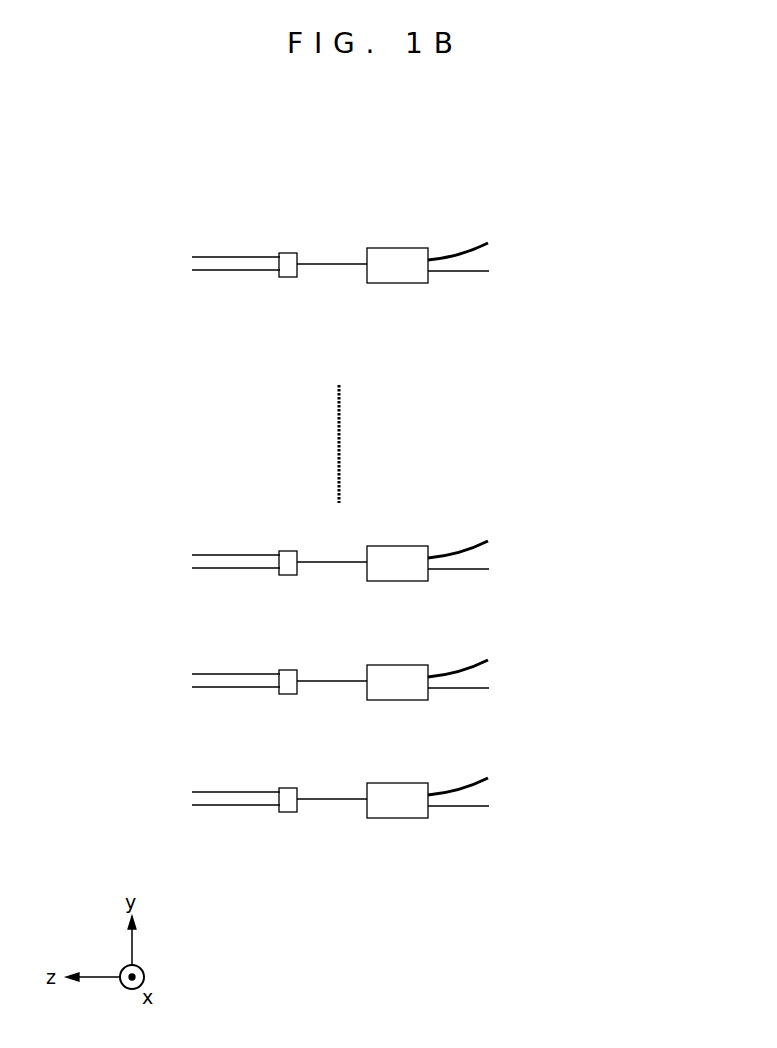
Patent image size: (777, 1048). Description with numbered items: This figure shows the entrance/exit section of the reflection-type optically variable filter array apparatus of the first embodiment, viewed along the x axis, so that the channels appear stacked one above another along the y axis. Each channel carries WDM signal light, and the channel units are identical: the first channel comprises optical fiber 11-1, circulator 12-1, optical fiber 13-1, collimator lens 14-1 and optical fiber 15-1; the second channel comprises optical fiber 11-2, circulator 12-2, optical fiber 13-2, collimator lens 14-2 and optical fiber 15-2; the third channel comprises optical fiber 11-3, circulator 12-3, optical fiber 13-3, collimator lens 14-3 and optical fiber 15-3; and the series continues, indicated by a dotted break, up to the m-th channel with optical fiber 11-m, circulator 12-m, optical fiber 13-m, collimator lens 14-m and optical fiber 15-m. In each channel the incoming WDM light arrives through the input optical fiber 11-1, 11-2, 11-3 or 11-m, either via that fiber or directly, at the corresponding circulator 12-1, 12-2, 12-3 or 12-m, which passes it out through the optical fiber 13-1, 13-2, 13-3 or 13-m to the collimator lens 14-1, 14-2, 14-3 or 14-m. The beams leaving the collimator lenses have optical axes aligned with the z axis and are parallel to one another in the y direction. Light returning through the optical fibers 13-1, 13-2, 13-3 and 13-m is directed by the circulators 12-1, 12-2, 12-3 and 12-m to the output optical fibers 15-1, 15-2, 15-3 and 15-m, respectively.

The optical fiber 11-m is at (457, 252).
The circulator 12-m is at (400, 283).
The optical fiber 13-m is at (340, 264).
The collimator lens 14-m is at (282, 277).
The optical fiber 15-m is at (507, 288).
The optical fiber 11-3 is at (457, 550).
The circulator 12-3 is at (400, 581).
The optical fiber 13-3 is at (340, 562).
The collimator lens 14-3 is at (282, 575).
The optical fiber 15-3 is at (507, 586).
The optical fiber 11-2 is at (457, 669).
The circulator 12-2 is at (400, 700).
The optical fiber 13-2 is at (340, 681).
The collimator lens 14-2 is at (282, 694).
The optical fiber 15-2 is at (507, 705).
The optical fiber 11-1 is at (457, 787).
The circulator 12-1 is at (400, 818).
The optical fiber 13-1 is at (340, 799).
The collimator lens 14-1 is at (282, 812).
The optical fiber 15-1 is at (507, 823).